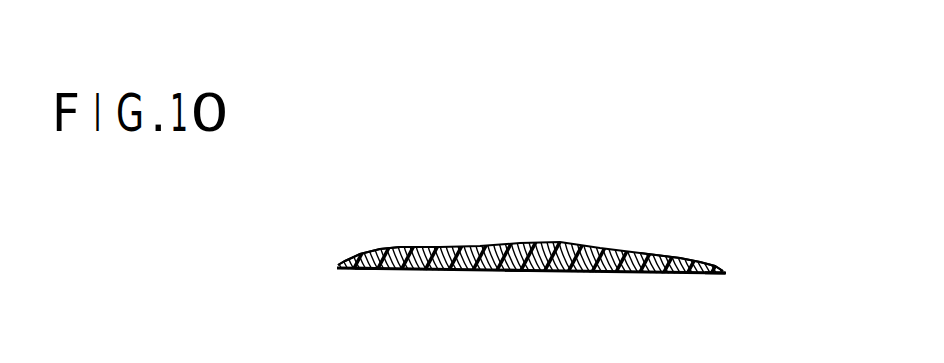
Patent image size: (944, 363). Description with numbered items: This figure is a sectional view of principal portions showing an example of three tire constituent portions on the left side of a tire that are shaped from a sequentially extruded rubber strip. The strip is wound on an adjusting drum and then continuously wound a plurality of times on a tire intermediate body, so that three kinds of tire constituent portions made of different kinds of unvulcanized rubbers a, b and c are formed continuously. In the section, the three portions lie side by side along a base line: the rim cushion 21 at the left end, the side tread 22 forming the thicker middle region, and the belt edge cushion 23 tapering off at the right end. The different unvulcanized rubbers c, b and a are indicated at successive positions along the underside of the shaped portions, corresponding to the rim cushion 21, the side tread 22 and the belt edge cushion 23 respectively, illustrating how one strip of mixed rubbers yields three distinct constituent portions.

The rim cushion 21 is at (369, 252).
The side tread 22 is at (530, 243).
The belt edge cushion 23 is at (693, 254).
The unvulcanized rubber a is at (713, 275).
The unvulcanized rubber b is at (514, 273).
The unvulcanized rubber c is at (365, 271).